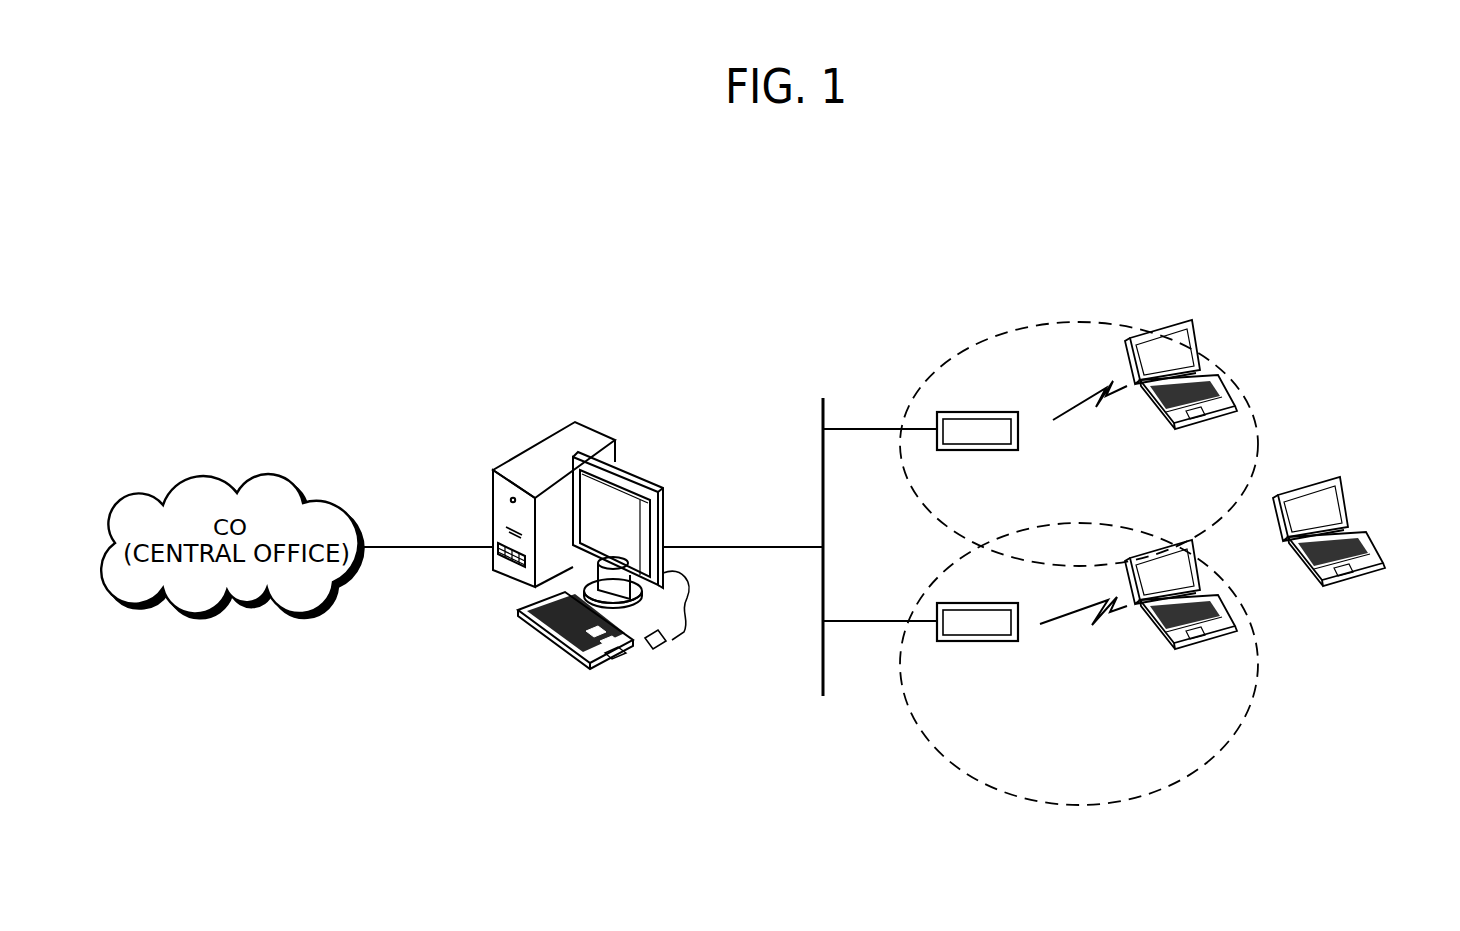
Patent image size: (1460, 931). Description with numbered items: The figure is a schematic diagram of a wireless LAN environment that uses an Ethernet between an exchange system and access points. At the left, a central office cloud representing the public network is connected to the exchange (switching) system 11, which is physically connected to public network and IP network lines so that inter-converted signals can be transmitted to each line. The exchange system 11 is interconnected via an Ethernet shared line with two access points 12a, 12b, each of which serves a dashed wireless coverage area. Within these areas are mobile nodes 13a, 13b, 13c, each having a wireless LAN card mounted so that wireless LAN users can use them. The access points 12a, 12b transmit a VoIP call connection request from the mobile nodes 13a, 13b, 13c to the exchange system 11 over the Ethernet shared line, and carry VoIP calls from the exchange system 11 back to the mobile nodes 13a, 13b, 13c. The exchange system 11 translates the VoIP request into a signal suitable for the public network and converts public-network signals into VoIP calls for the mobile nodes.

The exchange (switching) system 11 is at (593, 433).
The access point 12a is at (987, 412).
The access point 12b is at (988, 603).
The mobile node 13a is at (1233, 382).
The mobile node 13b is at (1348, 502).
The mobile node 13c is at (1237, 613).